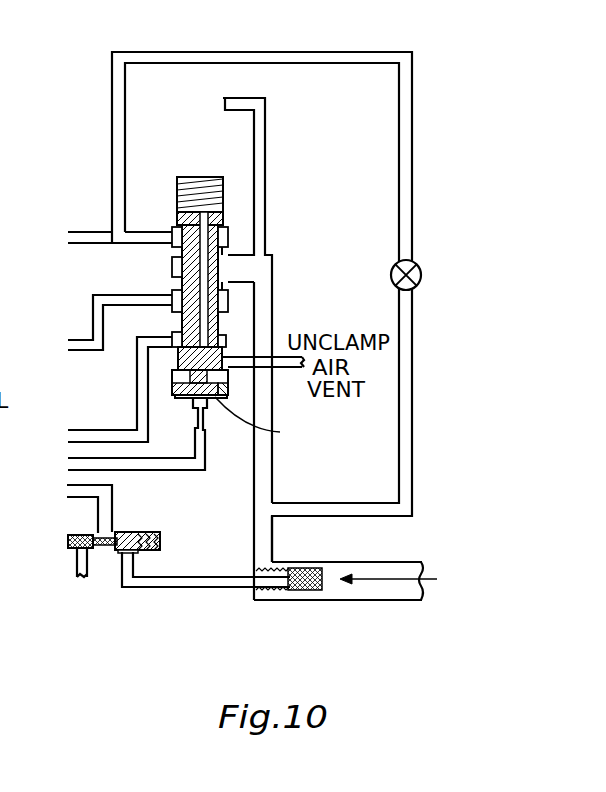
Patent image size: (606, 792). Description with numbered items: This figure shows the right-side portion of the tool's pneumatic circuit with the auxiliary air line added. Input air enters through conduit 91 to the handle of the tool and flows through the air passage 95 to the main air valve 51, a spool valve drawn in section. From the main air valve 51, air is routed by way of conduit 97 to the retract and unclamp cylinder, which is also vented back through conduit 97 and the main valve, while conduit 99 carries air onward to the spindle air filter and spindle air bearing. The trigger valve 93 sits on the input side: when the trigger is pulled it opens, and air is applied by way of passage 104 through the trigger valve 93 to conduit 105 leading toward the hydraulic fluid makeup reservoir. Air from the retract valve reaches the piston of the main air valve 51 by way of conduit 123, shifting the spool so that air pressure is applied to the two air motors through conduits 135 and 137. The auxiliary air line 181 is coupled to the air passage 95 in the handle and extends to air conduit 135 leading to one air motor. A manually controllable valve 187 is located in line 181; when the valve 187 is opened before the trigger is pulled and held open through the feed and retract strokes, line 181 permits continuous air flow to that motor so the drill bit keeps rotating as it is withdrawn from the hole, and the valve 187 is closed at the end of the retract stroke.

The main air valve 51 is at (224, 214).
The conduit 91 is at (400, 562).
The trigger valve 93 is at (140, 532).
The conduit 95 is at (273, 467).
The conduit 97 is at (137, 392).
The conduit 99 is at (267, 122).
The passage 104 is at (193, 587).
The conduit 105 is at (100, 513).
The conduit 123 is at (166, 471).
The conduit 135 is at (148, 248).
The conduit 137 is at (93, 302).
The auxiliary air line 181 is at (413, 387).
The manually controllable valve 187 is at (391, 273).